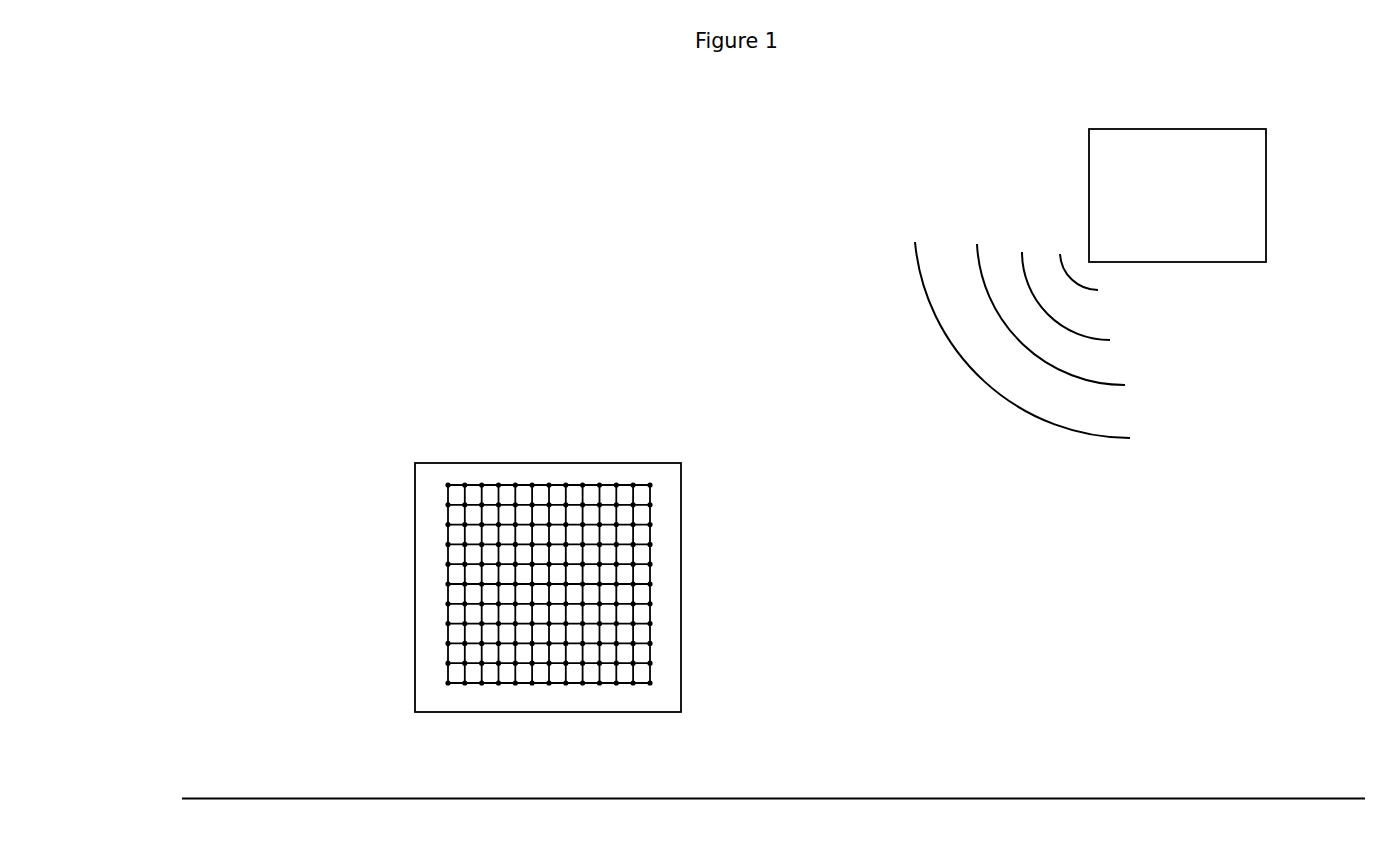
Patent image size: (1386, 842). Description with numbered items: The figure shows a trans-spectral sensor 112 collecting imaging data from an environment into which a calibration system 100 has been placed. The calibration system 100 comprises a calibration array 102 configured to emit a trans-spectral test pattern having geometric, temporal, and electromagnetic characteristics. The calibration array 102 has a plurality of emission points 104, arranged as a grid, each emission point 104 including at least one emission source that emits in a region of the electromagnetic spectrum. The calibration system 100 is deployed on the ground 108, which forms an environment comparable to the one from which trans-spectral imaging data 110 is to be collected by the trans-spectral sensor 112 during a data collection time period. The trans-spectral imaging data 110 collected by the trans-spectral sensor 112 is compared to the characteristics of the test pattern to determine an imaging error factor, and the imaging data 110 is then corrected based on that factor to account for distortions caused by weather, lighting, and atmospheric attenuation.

The calibration system 100 is at (418, 458).
The calibration array 102 is at (508, 478).
The emission point 104 is at (650, 485).
The ground 108 is at (877, 799).
The trans-spectral imaging data 110 is at (1128, 437).
The trans-spectral sensor 112 is at (1215, 262).